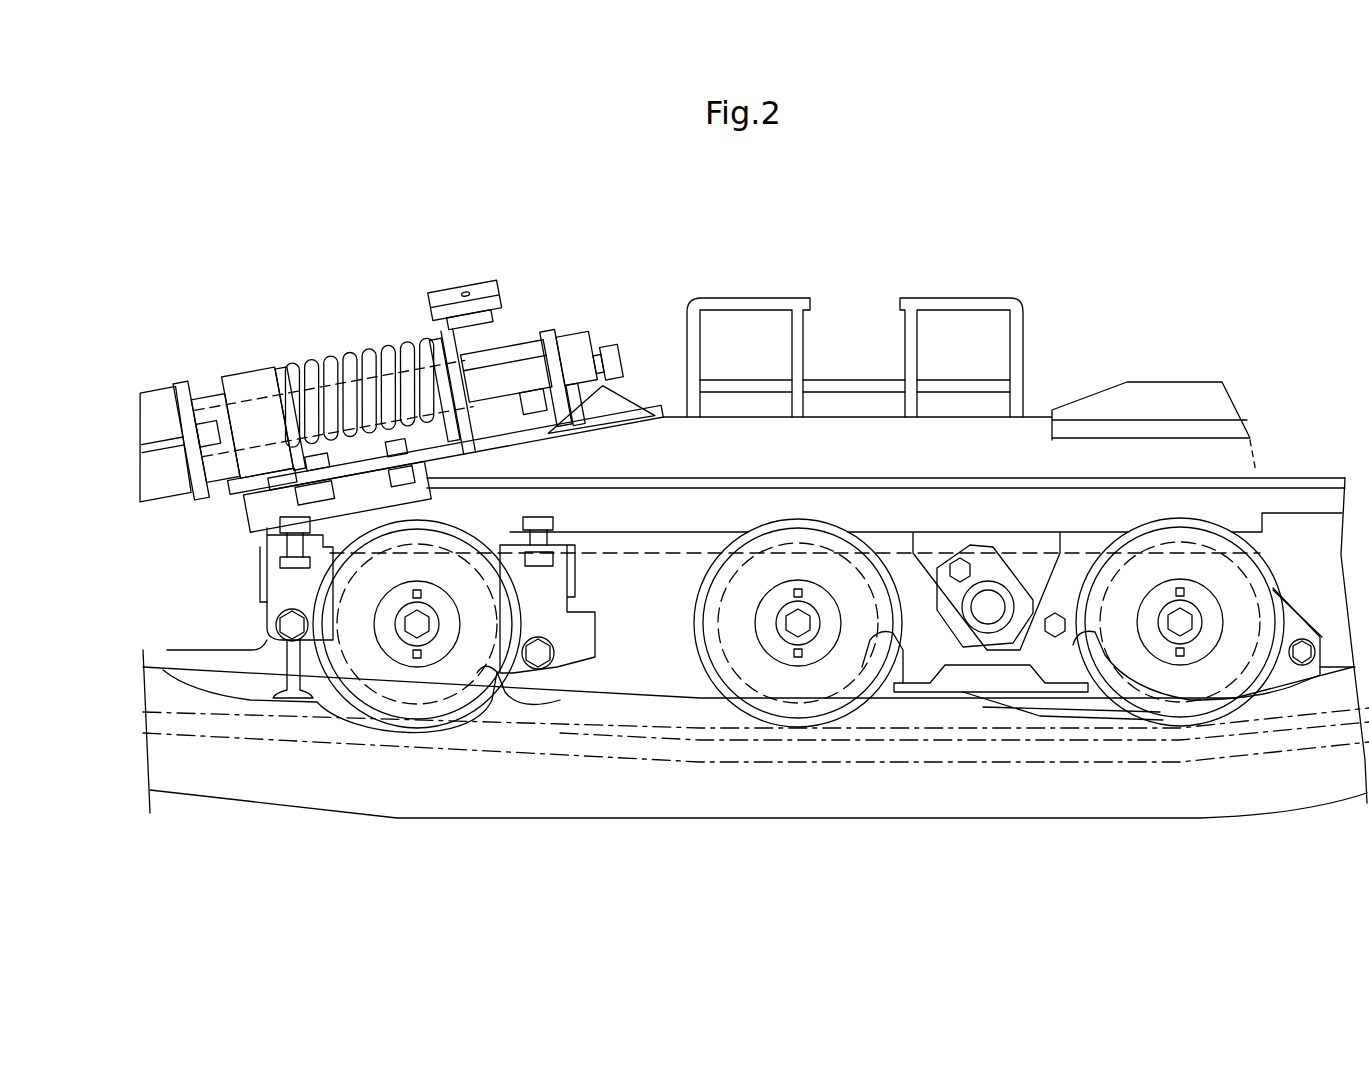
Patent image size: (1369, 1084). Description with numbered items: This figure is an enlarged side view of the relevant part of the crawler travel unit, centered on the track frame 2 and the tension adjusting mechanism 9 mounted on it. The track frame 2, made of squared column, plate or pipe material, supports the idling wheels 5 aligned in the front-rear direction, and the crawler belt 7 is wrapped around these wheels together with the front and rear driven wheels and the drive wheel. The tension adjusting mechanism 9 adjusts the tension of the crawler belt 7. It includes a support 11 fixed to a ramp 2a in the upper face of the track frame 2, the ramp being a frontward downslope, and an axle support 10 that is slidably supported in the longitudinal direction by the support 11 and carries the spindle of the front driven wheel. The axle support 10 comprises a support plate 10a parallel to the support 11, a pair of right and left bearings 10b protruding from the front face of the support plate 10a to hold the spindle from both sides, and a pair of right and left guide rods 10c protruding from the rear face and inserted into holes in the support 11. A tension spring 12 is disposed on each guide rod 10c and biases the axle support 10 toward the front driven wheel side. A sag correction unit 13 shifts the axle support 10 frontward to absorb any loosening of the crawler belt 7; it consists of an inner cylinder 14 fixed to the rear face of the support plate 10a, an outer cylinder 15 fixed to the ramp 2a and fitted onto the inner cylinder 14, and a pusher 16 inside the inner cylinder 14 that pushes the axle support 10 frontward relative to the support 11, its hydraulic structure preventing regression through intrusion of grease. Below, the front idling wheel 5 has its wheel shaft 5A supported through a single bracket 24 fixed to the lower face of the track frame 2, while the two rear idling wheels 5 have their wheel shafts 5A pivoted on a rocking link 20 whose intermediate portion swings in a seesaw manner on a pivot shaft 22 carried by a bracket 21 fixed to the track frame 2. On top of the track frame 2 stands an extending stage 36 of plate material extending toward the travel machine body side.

The track frame 2 is at (1050, 384).
The ramp 2a is at (553, 430).
The idling wheels 5 is at (513, 603).
The wheel shaft 5A is at (420, 627).
The crawler belt 7 is at (917, 803).
The tension adjusting mechanism 9 is at (552, 276).
The axle support 10 is at (134, 387).
The support plate 10a is at (177, 422).
The bearings 10b is at (143, 428).
The guide rods 10c is at (212, 433).
The support 11 is at (455, 312).
The tension spring 12 is at (345, 358).
The sag correction unit 13 is at (322, 383).
The inner cylinder 14 is at (208, 393).
The outer cylinder 15 is at (248, 378).
The pusher 16 is at (333, 383).
The rocking link 20 is at (900, 573).
The bracket 21 is at (923, 542).
The pivot shaft 22 is at (988, 605).
The bracket 24 is at (282, 582).
The extending stage 36 is at (953, 300).